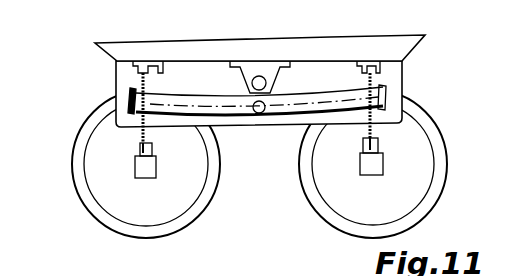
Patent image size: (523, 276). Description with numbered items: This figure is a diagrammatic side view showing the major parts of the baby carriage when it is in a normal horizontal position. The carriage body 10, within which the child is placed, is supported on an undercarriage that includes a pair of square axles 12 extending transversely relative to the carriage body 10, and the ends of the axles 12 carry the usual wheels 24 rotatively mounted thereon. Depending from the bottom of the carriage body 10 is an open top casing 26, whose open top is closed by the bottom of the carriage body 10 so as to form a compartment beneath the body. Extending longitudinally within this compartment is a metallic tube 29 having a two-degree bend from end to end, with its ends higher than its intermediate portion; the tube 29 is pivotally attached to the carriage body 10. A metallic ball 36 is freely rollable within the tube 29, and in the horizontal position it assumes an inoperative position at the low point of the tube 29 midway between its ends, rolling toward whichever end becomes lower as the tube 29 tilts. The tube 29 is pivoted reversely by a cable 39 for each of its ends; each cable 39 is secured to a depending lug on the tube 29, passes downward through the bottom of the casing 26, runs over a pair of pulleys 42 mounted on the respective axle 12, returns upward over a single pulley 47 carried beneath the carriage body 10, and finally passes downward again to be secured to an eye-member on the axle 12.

The carriage body 10 is at (285, 50).
The square axles 12 is at (142, 171).
The wheels 24 is at (83, 191).
The open top casing 26 is at (121, 78).
The metallic tube 29 is at (308, 102).
The metallic ball 36 is at (262, 113).
The cable 39 is at (127, 117).
The pulleys 42 is at (143, 146).
The pulley 47 is at (157, 72).